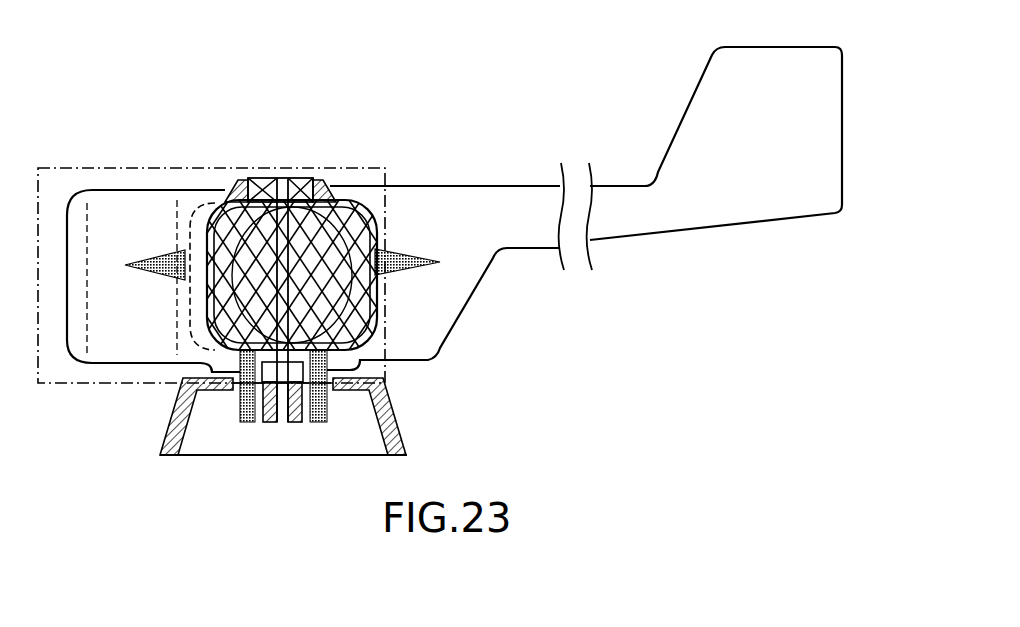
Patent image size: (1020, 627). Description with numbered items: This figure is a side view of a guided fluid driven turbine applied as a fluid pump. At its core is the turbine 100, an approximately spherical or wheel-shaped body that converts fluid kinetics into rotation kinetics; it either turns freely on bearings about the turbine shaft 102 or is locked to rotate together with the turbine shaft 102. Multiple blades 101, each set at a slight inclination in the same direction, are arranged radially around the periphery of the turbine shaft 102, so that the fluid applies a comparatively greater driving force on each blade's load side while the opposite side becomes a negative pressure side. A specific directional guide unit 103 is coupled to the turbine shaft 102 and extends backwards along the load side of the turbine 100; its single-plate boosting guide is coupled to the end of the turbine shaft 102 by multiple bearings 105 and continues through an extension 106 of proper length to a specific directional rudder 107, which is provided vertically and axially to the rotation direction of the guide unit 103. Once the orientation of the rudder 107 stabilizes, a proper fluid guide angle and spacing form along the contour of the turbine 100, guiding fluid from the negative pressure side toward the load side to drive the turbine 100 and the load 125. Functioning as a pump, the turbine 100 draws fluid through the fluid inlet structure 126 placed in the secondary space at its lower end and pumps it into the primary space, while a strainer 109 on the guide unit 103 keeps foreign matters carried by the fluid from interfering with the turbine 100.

The turbine 100 is at (253, 178).
The blades 101 is at (211, 197).
The turbine shaft 102 is at (280, 178).
The specific directional guide unit 103 is at (108, 168).
The bearings 105 is at (299, 180).
The extension 106 is at (499, 208).
The specific directional rudder 107 is at (745, 73).
The strainer 109 is at (355, 197).
The load 125 is at (407, 433).
The fluid inlet structure 126 is at (250, 385).